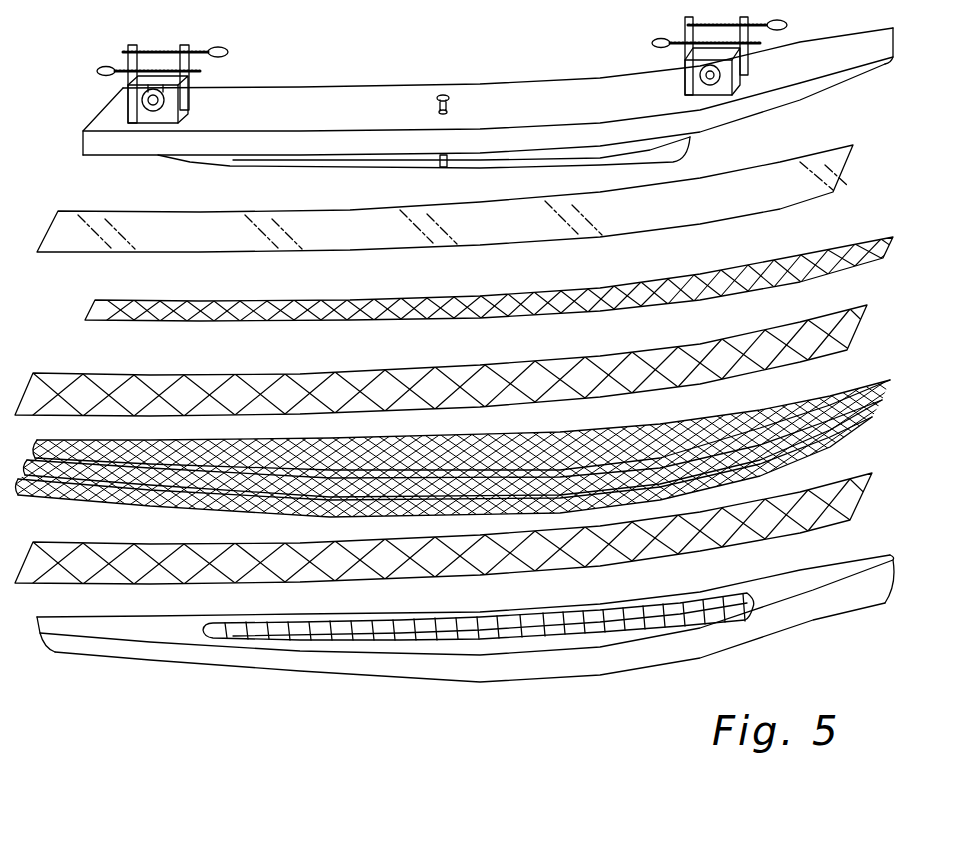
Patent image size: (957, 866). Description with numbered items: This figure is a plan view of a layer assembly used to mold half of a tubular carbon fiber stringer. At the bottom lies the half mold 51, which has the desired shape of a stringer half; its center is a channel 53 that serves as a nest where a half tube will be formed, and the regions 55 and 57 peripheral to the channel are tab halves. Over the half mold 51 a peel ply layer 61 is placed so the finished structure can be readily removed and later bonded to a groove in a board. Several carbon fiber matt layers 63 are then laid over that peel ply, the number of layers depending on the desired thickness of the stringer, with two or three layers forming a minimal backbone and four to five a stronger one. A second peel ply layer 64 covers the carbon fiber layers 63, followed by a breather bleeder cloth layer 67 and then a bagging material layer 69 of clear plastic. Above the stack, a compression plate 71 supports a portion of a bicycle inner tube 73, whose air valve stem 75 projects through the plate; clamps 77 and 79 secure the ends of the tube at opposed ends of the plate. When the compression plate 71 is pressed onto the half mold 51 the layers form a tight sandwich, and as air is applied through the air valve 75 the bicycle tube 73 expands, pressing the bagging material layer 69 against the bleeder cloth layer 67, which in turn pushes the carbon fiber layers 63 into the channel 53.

The half mold 51 is at (465, 651).
The channel 53 is at (320, 638).
The tab half region 55 is at (423, 642).
The tab half region 57 is at (500, 648).
The peel ply layer 61 is at (842, 495).
The carbon fiber matt layers 63 is at (870, 428).
The peel ply layer 64 is at (853, 344).
The breather bleeder cloth layer 67 is at (873, 239).
The bagging material layer 69 is at (847, 166).
The compression plate 71 is at (525, 98).
The bicycle inner tube 73 is at (440, 155).
The air valve stem 75 is at (445, 94).
The clamp 77 is at (195, 62).
The clamp 79 is at (682, 32).